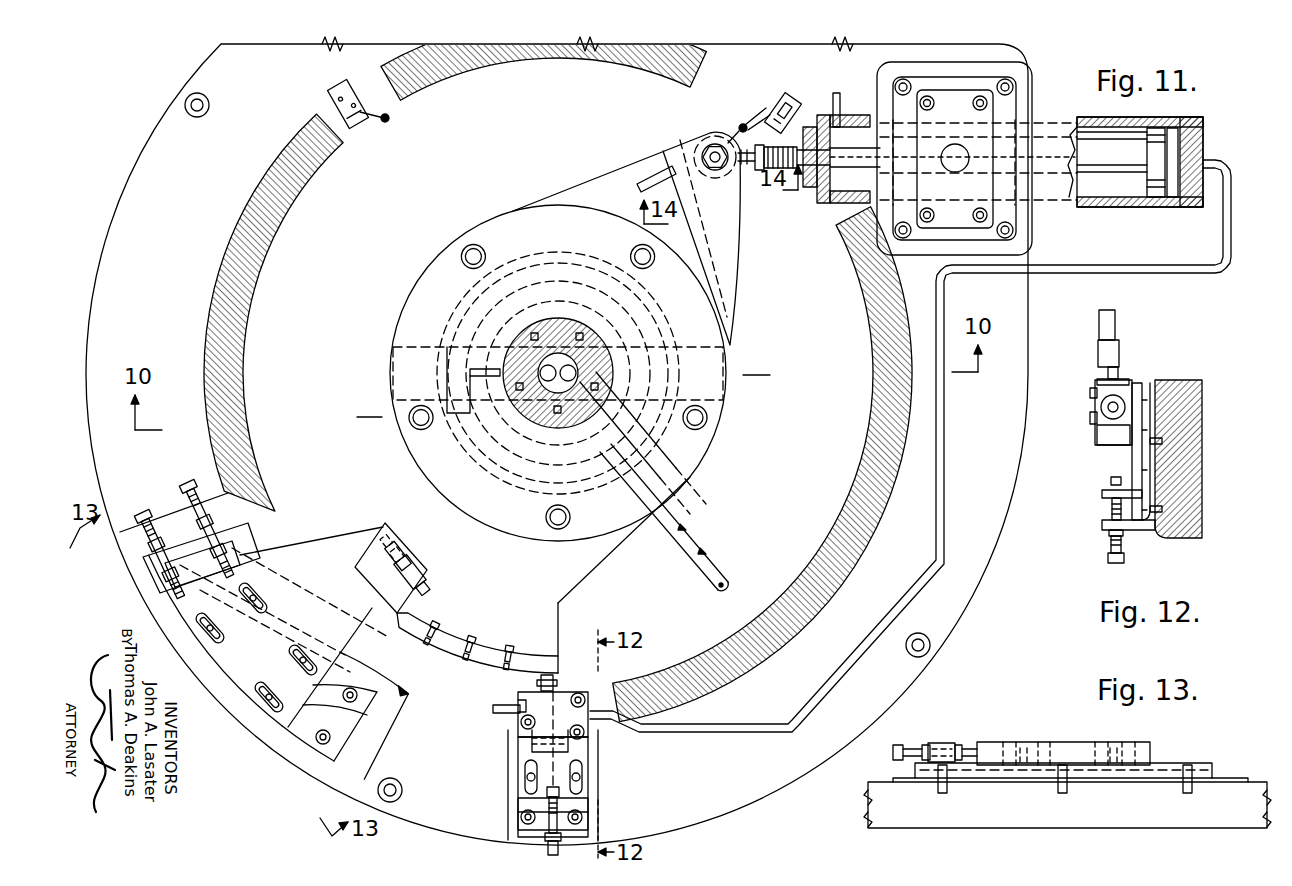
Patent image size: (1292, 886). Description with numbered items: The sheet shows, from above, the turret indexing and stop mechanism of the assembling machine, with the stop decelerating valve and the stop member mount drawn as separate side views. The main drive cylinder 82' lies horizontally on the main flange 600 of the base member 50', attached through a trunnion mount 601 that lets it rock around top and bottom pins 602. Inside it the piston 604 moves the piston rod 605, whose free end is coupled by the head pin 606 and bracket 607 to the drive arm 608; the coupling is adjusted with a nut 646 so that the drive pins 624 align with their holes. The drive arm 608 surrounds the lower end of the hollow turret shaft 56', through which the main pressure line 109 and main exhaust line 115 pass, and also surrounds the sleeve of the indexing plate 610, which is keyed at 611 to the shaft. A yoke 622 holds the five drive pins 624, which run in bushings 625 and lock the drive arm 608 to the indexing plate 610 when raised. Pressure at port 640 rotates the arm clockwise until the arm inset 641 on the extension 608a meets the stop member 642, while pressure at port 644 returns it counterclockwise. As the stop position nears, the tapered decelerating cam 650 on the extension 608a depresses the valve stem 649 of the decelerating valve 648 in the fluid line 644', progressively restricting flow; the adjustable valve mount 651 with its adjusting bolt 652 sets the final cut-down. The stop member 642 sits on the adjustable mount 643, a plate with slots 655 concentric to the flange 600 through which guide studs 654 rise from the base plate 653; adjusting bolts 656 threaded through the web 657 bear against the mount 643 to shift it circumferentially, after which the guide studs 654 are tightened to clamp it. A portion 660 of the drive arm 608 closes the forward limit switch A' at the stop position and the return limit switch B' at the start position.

In FIG. 11, the main flange 600 is at (137, 580).
In FIG. 12, the main flange 600 is at (1203, 443).
In FIG. 13, the main flange 600 is at (868, 804).
In FIG. 11, the base member 50' is at (543, 370).
In FIG. 11, the yoke 622 is at (415, 347).
In FIG. 11, the indexing plate 610 is at (478, 448).
In FIG. 11, the turret shaft 56' is at (558, 354).
In FIG. 11, the key 611 is at (496, 368).
In FIG. 11, the drive pins 624 is at (482, 246).
In FIG. 11, the bushings 625 is at (465, 262).
In FIG. 11, the main pressure line 109 is at (714, 530).
In FIG. 11, the main exhaust line 115 is at (696, 548).
In FIG. 11, the drive arm 608 is at (598, 160).
In FIG. 11, the bracket 607 is at (692, 150).
In FIG. 11, the head pin 606 is at (716, 148).
In FIG. 11, the portion of drive arm 660 is at (741, 124).
In FIG. 11, the forward limit switch A' is at (776, 98).
In FIG. 11, the return limit switch B' is at (347, 96).
In FIG. 11, the nut 646 is at (770, 170).
In FIG. 11, the piston rod 605 is at (845, 185).
In FIG. 11, the port 640 is at (836, 93).
In FIG. 11, the trunnion mount 601 is at (952, 228).
In FIG. 11, the pins 602 is at (955, 150).
In FIG. 11, the main drive cylinder 82' is at (1135, 180).
In FIG. 11, the piston 604 is at (1153, 198).
In FIG. 11, the port 644 is at (921, 427).
In FIG. 11, the fluid line 644' is at (975, 486).
In FIG. 12, the fluid line 644' is at (1083, 406).
In FIG. 11, the drive arm extension 608a is at (552, 620).
In FIG. 12, the drive arm extension 608a is at (1115, 318).
In FIG. 11, the decelerating cam 650 is at (452, 652).
In FIG. 12, the decelerating cam 650 is at (1119, 352).
In FIG. 11, the stop member 642 is at (390, 503).
In FIG. 11, the arm inset 641 is at (420, 560).
In FIG. 11, the adjustable mount 643 is at (345, 645).
In FIG. 13, the adjustable mount 643 is at (1064, 742).
In FIG. 11, the web 657 is at (232, 536).
In FIG. 13, the web 657 is at (900, 745).
In FIG. 11, the adjusting bolts 656 is at (170, 515).
In FIG. 11, the guide studs 654 is at (268, 602).
In FIG. 13, the guide studs 654 is at (1025, 772).
In FIG. 11, the slots 655 is at (222, 622).
In FIG. 11, the base plate 653 is at (362, 728).
In FIG. 13, the base plate 653 is at (1212, 764).
In FIG. 11, the valve stem 649 is at (556, 683).
In FIG. 12, the valve stem 649 is at (1120, 370).
In FIG. 11, the decelerating valve 648 is at (592, 725).
In FIG. 12, the decelerating valve 648 is at (1098, 428).
In FIG. 11, the adjustable valve mount 651 is at (518, 790).
In FIG. 12, the adjustable valve mount 651 is at (1135, 453).
In FIG. 11, the adjusting bolt 652 is at (545, 848).
In FIG. 12, the adjusting bolt 652 is at (1110, 547).